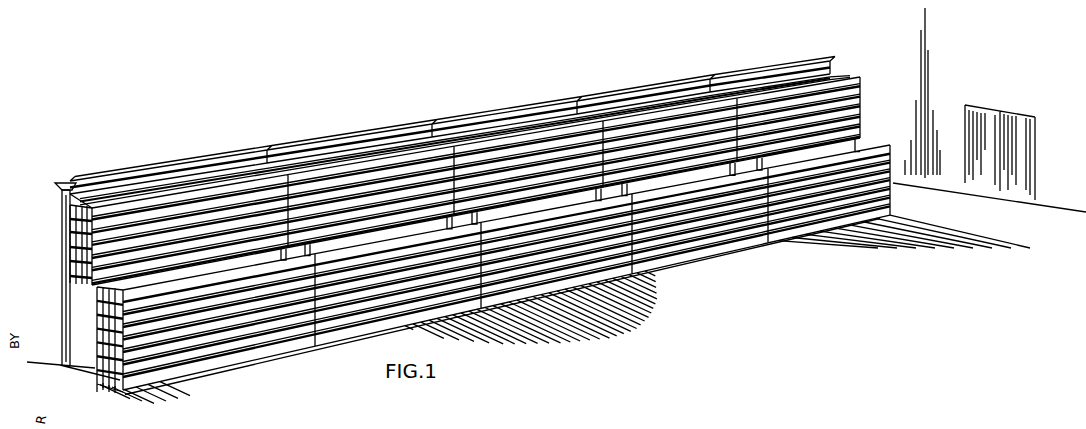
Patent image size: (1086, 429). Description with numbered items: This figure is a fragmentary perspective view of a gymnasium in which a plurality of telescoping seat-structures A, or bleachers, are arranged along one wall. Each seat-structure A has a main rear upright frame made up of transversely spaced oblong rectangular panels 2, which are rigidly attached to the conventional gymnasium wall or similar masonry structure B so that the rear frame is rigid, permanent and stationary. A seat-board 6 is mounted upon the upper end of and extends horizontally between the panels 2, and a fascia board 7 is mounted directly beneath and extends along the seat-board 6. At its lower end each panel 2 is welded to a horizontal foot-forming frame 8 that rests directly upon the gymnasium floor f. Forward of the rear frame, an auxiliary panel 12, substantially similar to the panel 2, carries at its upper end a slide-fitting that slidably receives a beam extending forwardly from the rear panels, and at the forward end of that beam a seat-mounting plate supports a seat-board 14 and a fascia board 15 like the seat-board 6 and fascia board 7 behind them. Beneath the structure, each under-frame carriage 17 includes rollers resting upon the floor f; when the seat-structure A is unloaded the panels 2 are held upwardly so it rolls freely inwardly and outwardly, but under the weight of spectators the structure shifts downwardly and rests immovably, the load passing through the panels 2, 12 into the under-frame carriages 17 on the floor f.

The panel 2 is at (62, 296).
The seat-board 6 is at (108, 178).
The fascia board 7 is at (68, 198).
The horizontal foot-forming frame 8 is at (67, 370).
The auxiliary panel 12 is at (92, 321).
The seat-board 14 is at (852, 76).
The fascia board 15 is at (856, 106).
The under-frame carriage 17 is at (93, 369).
The telescoping seat-structure A is at (175, 166).
The gymnasium wall B is at (913, 78).
The gymnasium floor f is at (1040, 214).